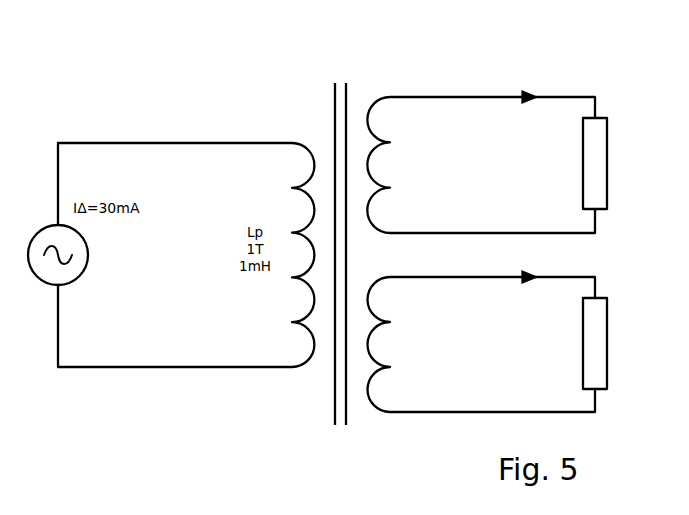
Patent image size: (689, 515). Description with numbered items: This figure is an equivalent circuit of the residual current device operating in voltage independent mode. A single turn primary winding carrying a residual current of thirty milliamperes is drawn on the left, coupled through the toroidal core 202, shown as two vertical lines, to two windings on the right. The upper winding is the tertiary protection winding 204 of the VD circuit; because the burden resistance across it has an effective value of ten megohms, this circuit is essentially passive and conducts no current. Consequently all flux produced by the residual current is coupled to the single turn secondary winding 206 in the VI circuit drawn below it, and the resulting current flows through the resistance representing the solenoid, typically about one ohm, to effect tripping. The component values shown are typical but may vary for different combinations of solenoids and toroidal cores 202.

The toroidal core 202 is at (330, 108).
The tertiary protection winding 204 is at (375, 93).
The single turn secondary winding 206 is at (376, 416).